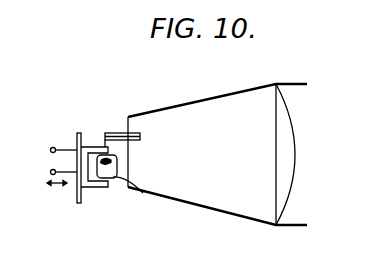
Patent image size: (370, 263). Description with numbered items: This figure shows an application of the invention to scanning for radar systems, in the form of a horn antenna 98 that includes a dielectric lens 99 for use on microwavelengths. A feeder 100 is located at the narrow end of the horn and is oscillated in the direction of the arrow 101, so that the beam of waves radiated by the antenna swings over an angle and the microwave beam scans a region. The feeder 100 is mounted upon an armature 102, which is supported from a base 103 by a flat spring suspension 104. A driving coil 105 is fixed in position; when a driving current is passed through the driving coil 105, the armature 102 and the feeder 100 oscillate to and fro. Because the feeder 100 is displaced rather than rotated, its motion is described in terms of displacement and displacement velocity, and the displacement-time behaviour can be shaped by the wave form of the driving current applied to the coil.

The horn antenna 98 is at (173, 106).
The dielectric lens 99 is at (287, 134).
The feeder 100 is at (139, 135).
The arrow 101 is at (113, 125).
The armature 102 is at (150, 194).
The base 103 is at (79, 146).
The flat spring suspension 104 is at (88, 148).
The driving coil 105 is at (97, 169).